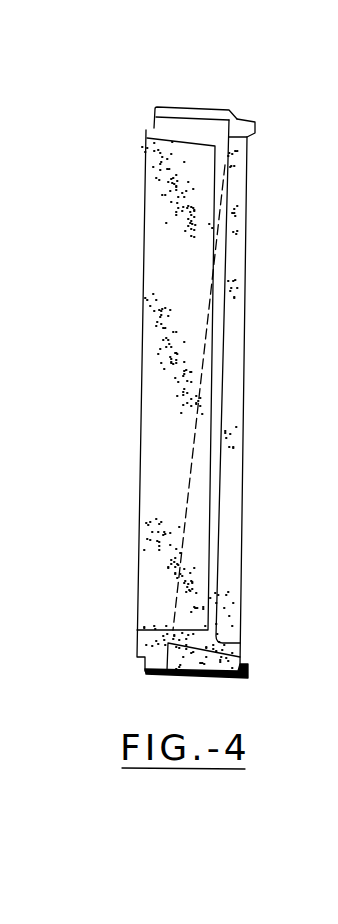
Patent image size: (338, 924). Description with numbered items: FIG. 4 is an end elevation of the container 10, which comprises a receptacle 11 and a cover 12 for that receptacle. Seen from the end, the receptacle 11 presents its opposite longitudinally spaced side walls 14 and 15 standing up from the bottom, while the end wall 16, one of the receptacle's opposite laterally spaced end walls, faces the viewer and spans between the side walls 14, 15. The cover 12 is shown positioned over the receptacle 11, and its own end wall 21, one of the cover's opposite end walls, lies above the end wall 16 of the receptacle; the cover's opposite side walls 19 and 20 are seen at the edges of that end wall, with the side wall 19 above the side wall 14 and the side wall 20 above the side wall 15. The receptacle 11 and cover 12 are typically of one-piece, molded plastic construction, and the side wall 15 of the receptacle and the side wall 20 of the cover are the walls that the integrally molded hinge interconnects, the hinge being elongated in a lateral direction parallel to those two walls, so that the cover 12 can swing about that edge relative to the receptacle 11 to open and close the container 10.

The container 10 is at (132, 113).
The receptacle 11 is at (242, 212).
The cover 12 is at (148, 467).
The side wall 14 is at (207, 674).
The side wall 15 is at (241, 118).
The end wall 16 is at (236, 376).
The side wall 19 is at (153, 674).
The side wall 20 is at (188, 107).
The end wall 21 is at (153, 328).